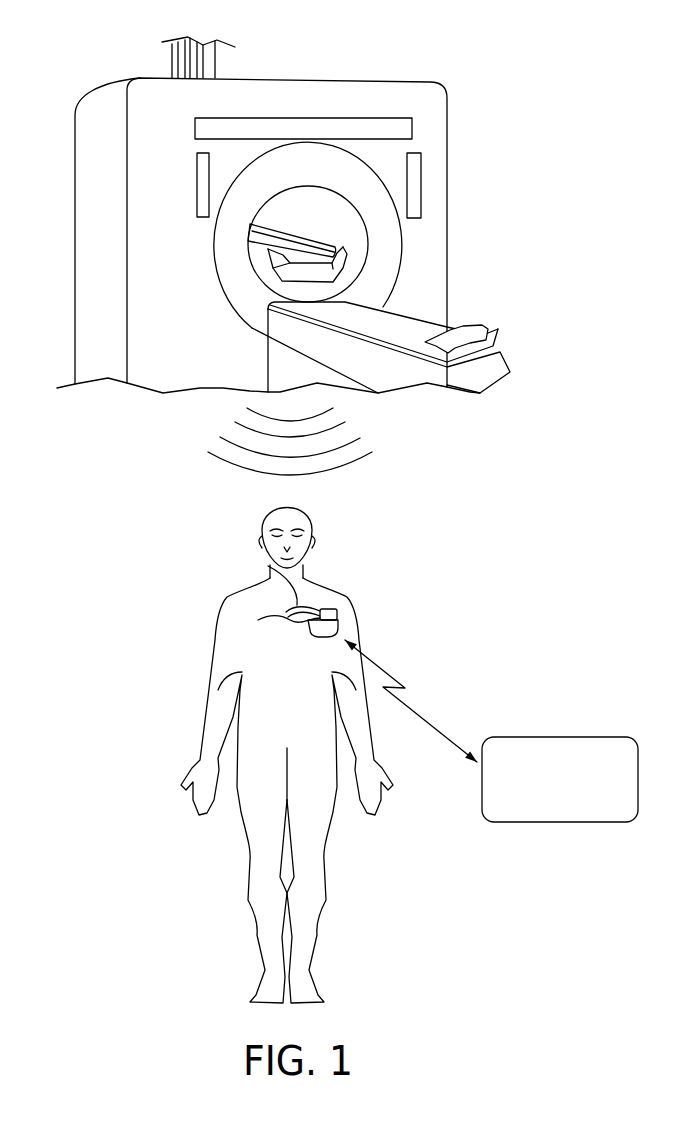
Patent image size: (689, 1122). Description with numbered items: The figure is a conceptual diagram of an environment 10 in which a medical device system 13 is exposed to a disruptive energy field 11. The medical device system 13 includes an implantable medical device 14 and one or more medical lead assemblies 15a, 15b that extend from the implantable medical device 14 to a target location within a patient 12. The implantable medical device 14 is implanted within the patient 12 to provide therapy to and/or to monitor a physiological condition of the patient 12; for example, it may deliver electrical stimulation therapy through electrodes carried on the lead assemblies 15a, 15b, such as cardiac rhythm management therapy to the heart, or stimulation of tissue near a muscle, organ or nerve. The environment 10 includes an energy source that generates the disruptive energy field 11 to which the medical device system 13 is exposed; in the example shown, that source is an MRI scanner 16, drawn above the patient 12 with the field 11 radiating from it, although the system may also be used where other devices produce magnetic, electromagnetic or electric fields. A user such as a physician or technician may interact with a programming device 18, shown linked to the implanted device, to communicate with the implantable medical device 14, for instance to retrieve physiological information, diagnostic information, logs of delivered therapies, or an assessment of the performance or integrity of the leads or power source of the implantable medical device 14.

The environment 10 is at (333, 248).
The disruptive energy field 11 is at (388, 425).
The patient 12 is at (213, 660).
The medical device system 13 is at (360, 617).
The implantable medical device 14 is at (314, 627).
The medical lead assembly 15a is at (268, 566).
The medical lead assembly 15b is at (258, 620).
The MRI scanner 16 is at (458, 238).
The programming device 18 is at (550, 812).